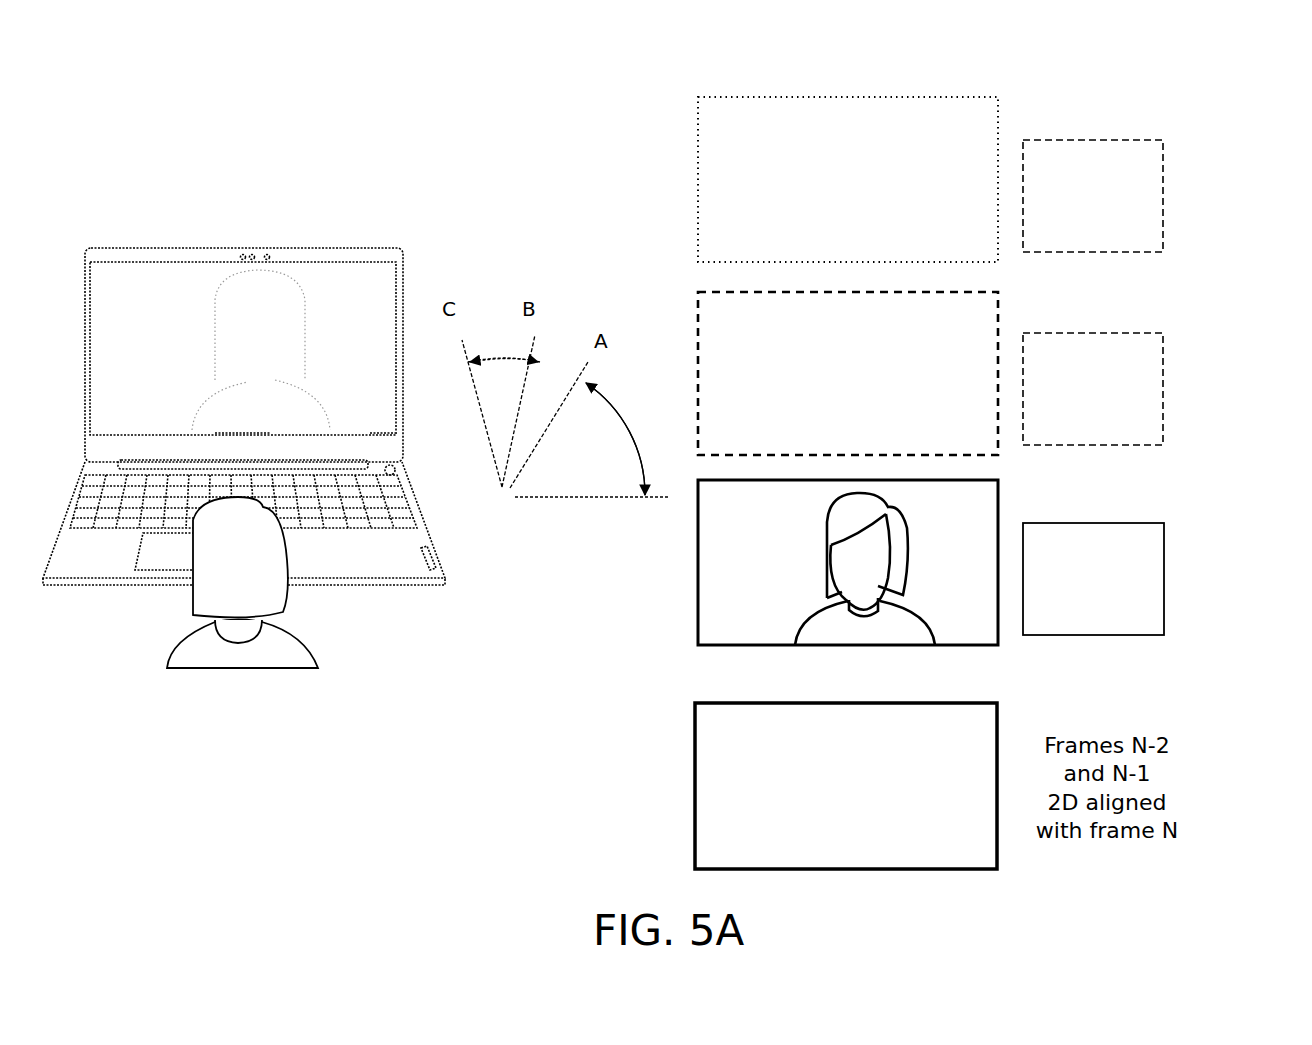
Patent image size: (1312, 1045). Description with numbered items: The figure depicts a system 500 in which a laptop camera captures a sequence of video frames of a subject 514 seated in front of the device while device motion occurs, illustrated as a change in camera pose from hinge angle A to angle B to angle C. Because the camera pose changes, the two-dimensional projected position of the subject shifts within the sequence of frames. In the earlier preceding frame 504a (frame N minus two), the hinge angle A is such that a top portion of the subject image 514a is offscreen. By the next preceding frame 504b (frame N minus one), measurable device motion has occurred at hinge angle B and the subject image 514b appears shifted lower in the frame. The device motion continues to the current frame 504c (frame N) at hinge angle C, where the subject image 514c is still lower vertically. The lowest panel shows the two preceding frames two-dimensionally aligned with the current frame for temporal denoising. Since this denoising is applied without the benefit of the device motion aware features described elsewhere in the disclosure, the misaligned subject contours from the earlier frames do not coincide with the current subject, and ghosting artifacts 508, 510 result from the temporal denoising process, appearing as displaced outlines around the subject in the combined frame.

The system 500 is at (148, 78).
The subject 514 is at (238, 583).
The subject image 514a is at (828, 155).
The subject image 514b is at (828, 360).
The subject image 514c is at (826, 575).
The preceding frame 504a is at (1165, 192).
The preceding frame 504b is at (1165, 387).
The current frame 504c is at (1165, 580).
The ghosting artifact 508 is at (786, 825).
The ghosting artifact 510 is at (786, 840).